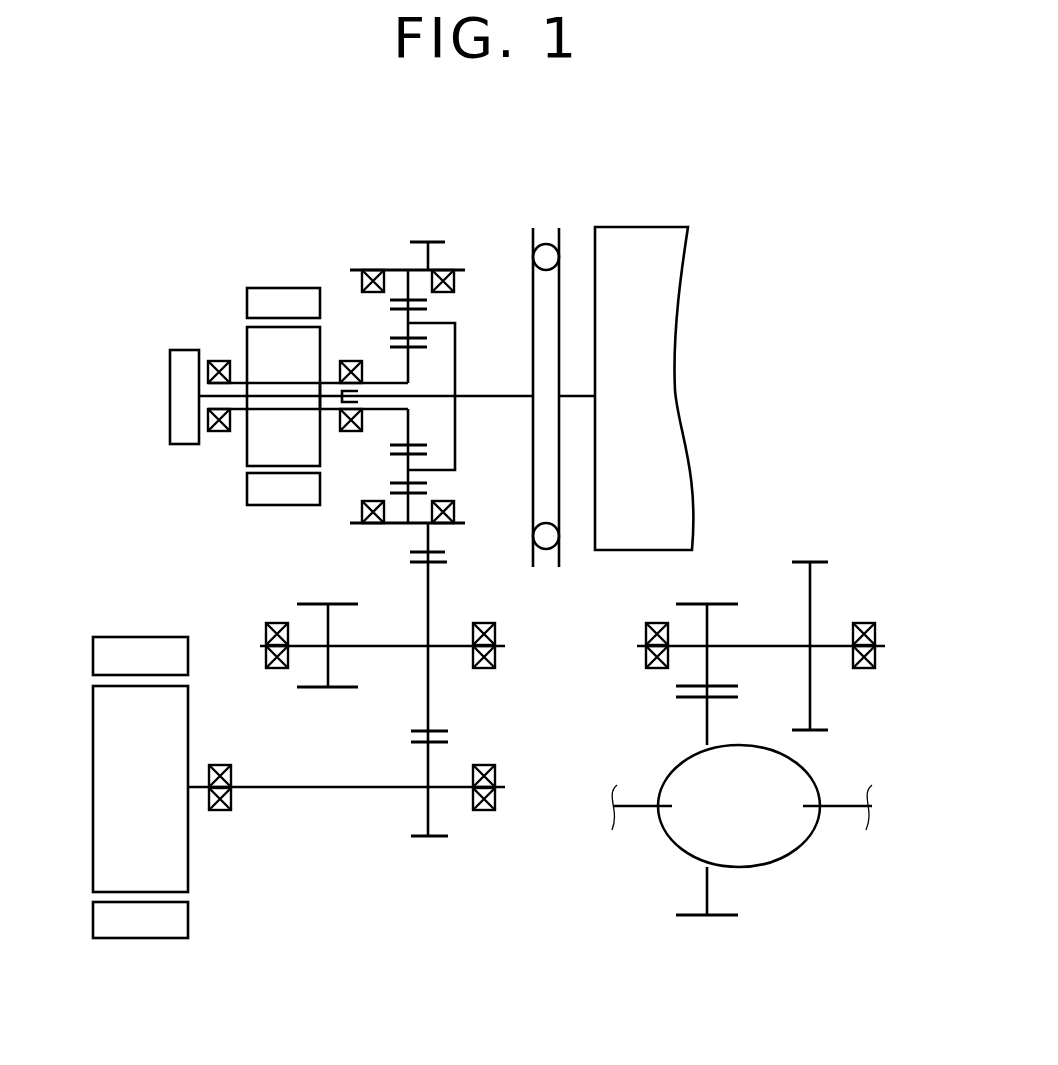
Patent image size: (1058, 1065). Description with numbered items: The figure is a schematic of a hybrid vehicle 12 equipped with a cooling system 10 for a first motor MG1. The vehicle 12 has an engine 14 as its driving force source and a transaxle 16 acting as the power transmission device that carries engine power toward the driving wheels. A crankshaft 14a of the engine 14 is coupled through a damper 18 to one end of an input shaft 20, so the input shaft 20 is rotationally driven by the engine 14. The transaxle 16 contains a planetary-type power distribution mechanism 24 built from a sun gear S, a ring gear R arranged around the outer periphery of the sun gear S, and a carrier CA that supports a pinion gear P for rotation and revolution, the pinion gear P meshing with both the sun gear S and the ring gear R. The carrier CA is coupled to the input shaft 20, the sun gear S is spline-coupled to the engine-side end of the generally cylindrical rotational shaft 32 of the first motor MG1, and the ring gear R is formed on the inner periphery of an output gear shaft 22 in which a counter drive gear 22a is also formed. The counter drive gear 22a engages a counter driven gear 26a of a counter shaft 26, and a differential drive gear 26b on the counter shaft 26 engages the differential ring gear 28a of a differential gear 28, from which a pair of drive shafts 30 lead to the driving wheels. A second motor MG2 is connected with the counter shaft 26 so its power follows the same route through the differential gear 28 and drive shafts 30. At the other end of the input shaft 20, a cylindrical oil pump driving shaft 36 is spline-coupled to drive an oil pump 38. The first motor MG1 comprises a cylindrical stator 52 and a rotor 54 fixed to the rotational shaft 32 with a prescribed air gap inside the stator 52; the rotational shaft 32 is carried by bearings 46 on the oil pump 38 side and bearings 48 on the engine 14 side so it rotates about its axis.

The cooling system 10 is at (191, 345).
The hybrid vehicle 12 is at (652, 201).
The engine 14 is at (658, 315).
The crankshaft 14a is at (576, 394).
The transaxle 16 is at (330, 249).
The damper 18 is at (560, 240).
The input shaft 20 is at (495, 399).
The output gear shaft 22 is at (398, 258).
The counter drive gear 22a is at (435, 241).
The power distribution mechanism 24 is at (469, 365).
The counter shaft 26 is at (289, 607).
The counter driven gear 26a is at (438, 563).
The differential drive gear 26b is at (343, 604).
The differential gear 28 is at (686, 861).
The differential ring gear 28a is at (725, 698).
The drive shafts 30 is at (640, 805).
The rotational shaft 32 is at (327, 412).
The oil pump driving shaft 36 is at (240, 400).
The oil pump 38 is at (185, 391).
The bearings 46 is at (218, 433).
The bearings 48 is at (348, 432).
The stator 52 is at (256, 303).
The rotor 54 is at (258, 352).
The first motor MG1 is at (261, 377).
The second motor MG2 is at (299, 773).
The ring gear R is at (392, 305).
The pinion gear P is at (398, 326).
The sun gear S is at (414, 350).
The carrier CA is at (440, 322).